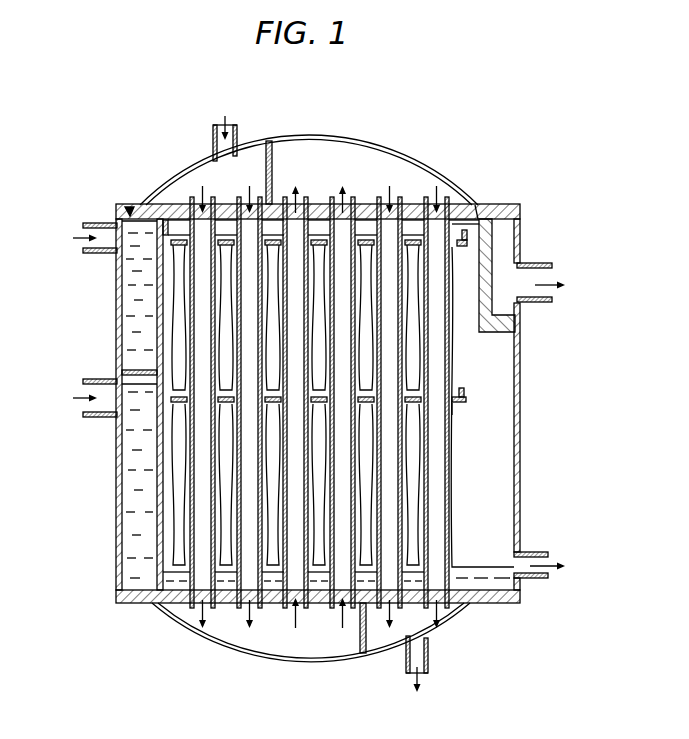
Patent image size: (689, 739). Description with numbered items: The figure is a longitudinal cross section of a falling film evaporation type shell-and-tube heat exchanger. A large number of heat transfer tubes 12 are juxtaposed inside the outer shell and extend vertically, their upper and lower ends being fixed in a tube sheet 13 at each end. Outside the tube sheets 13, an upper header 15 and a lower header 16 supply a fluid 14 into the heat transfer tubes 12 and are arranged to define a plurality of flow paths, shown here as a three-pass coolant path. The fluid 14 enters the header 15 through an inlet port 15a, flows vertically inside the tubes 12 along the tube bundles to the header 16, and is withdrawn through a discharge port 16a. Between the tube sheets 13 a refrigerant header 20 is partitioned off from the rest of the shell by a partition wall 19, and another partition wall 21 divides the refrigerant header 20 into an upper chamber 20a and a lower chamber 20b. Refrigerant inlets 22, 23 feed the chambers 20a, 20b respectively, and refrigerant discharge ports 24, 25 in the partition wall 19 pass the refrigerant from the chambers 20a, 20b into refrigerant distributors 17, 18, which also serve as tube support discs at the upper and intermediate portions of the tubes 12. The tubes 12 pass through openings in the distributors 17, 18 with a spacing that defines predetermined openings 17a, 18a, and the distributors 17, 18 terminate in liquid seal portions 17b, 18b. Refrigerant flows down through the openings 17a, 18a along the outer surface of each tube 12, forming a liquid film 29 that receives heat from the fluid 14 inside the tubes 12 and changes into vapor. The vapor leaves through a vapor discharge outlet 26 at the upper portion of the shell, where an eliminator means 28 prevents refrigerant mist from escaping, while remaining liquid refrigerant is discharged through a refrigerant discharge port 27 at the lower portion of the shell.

The heat transfer tubes 12 is at (458, 209).
The tube sheet 13 is at (410, 206).
The fluid 14 is at (200, 196).
The header 15 is at (362, 156).
The inlet port 15a is at (237, 137).
The header 16 is at (333, 645).
The discharge port 16a is at (430, 657).
The refrigerant distributor 17 is at (458, 226).
The openings 17a is at (463, 253).
The liquid seal portion 17b is at (477, 208).
The refrigerant distributor 18 is at (460, 402).
The openings 18a is at (455, 412).
The liquid seal portion 18b is at (466, 395).
The partition wall 19 is at (157, 333).
The refrigerant header 20 is at (128, 208).
The upper chamber 20a is at (130, 340).
The lower chamber 20b is at (130, 510).
The partition wall 21 is at (133, 371).
The refrigerant inlet 22 is at (93, 223).
The refrigerant inlet 23 is at (96, 390).
The refrigerant discharge port 24 is at (163, 232).
The refrigerant discharge port 25 is at (110, 380).
The vapor discharge outlet 26 is at (553, 294).
The refrigerant discharge port 27 is at (548, 552).
The eliminator means 28 is at (508, 323).
The liquid film 29 is at (183, 290).